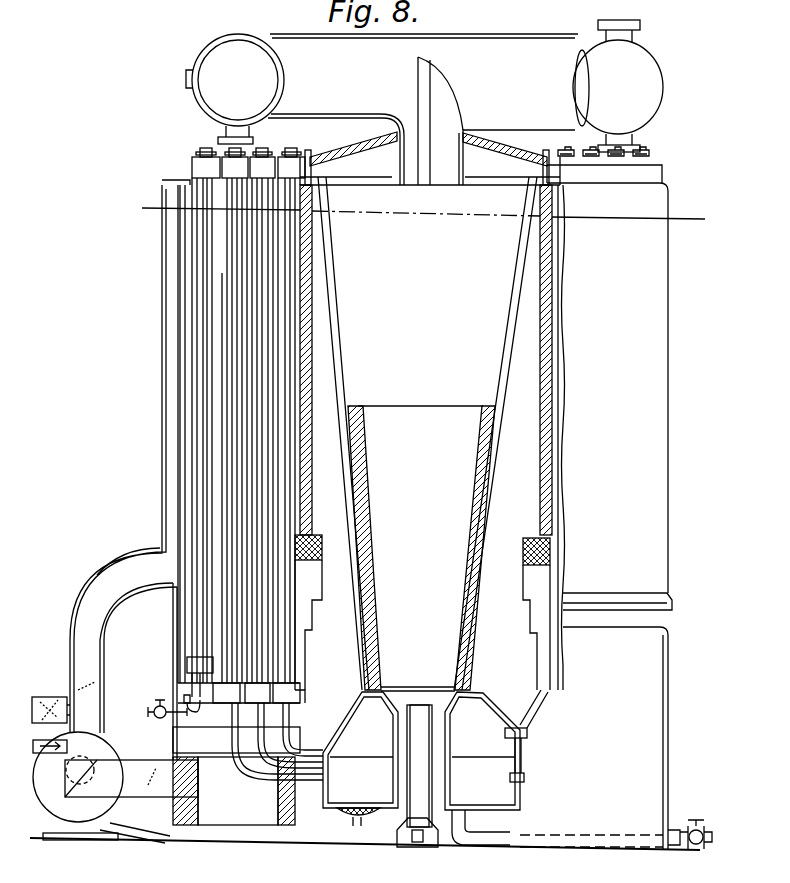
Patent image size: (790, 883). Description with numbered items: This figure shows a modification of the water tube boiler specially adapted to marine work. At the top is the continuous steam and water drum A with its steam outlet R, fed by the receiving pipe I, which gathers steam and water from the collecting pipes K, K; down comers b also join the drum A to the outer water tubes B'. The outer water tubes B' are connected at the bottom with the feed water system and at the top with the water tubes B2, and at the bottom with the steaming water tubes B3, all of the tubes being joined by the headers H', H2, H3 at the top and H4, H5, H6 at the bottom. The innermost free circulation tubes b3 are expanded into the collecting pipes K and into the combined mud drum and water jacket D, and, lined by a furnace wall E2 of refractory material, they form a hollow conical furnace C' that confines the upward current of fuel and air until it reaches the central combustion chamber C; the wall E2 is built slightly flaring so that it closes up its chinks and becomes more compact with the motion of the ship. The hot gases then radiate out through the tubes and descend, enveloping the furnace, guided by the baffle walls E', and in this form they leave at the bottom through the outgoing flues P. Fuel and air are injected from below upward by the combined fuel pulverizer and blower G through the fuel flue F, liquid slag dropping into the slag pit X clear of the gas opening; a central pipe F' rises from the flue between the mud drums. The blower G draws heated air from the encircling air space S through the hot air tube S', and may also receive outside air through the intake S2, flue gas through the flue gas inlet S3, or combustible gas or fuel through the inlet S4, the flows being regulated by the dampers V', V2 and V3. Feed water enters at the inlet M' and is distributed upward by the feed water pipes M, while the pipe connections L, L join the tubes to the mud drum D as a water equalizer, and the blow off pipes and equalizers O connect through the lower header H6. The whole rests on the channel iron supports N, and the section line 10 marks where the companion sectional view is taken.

The steam and water drum A is at (424, 84).
The receiving pipe I is at (423, 109).
The steam outlet R is at (619, 21).
The down comers b is at (216, 140).
The collecting pipes K is at (430, 158).
The header H' is at (169, 156).
The header H2 is at (222, 165).
The header H3 is at (260, 163).
The section line 10 is at (422, 215).
The water tubes B' is at (153, 430).
The water tubes B2 is at (237, 298).
The steaming water tubes B3 is at (293, 377).
The baffle walls E' is at (360, 437).
The water tubes b3 is at (338, 277).
The furnace wall E2 is at (468, 608).
The combustion chamber C is at (420, 351).
The furnace C' is at (418, 590).
The hot air tube S' is at (121, 459).
The encircling air space S is at (143, 506).
The damper V2 is at (83, 668).
The outgoing flues P is at (185, 622).
The damper V3 is at (48, 708).
The outside air intake S2 is at (35, 708).
The gas or fuel inlet S4 is at (39, 750).
The combined fuel pulverizer and blower G is at (78, 786).
The flue gas inlet S3 is at (131, 778).
The damper V' is at (135, 830).
The channel iron supports N is at (236, 740).
The header H4 is at (230, 690).
The header H5 is at (308, 658).
The lower header H6 is at (290, 690).
The feed water pipes M is at (165, 684).
The feed water inlet M' is at (146, 713).
The pipe connections L is at (290, 753).
The combined mud drum and water jacket D is at (455, 745).
The slag pit X is at (339, 816).
The central pipe F' is at (419, 766).
The fuel flue F is at (436, 845).
The blow off pipes and equalizers O is at (592, 830).